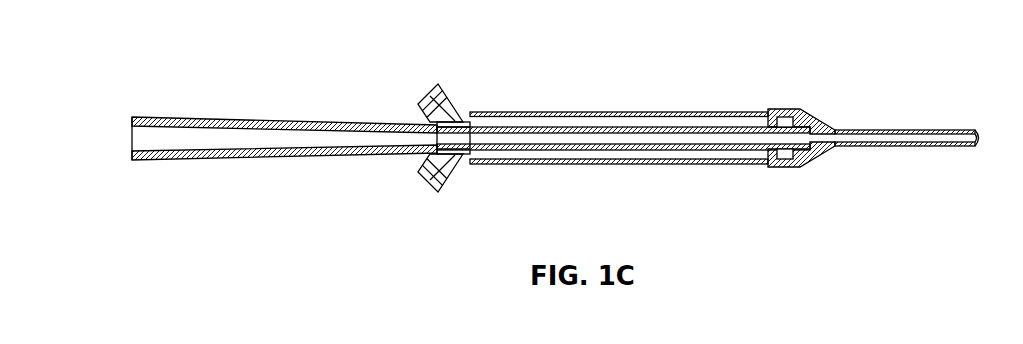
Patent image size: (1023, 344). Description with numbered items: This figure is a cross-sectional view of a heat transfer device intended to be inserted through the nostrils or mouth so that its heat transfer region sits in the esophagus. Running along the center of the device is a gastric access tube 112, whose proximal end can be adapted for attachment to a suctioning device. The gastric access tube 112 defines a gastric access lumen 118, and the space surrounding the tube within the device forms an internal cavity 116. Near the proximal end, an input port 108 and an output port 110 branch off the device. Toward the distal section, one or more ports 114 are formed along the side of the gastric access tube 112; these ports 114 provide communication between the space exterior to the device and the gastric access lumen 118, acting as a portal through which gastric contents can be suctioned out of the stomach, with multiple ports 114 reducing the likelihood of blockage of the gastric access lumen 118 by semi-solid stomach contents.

The input port 108 is at (428, 183).
The output port 110 is at (421, 99).
The gastric access tube 112 is at (208, 148).
The ports 114 is at (927, 131).
The internal cavity 116 is at (605, 151).
The gastric access lumen 118 is at (477, 141).